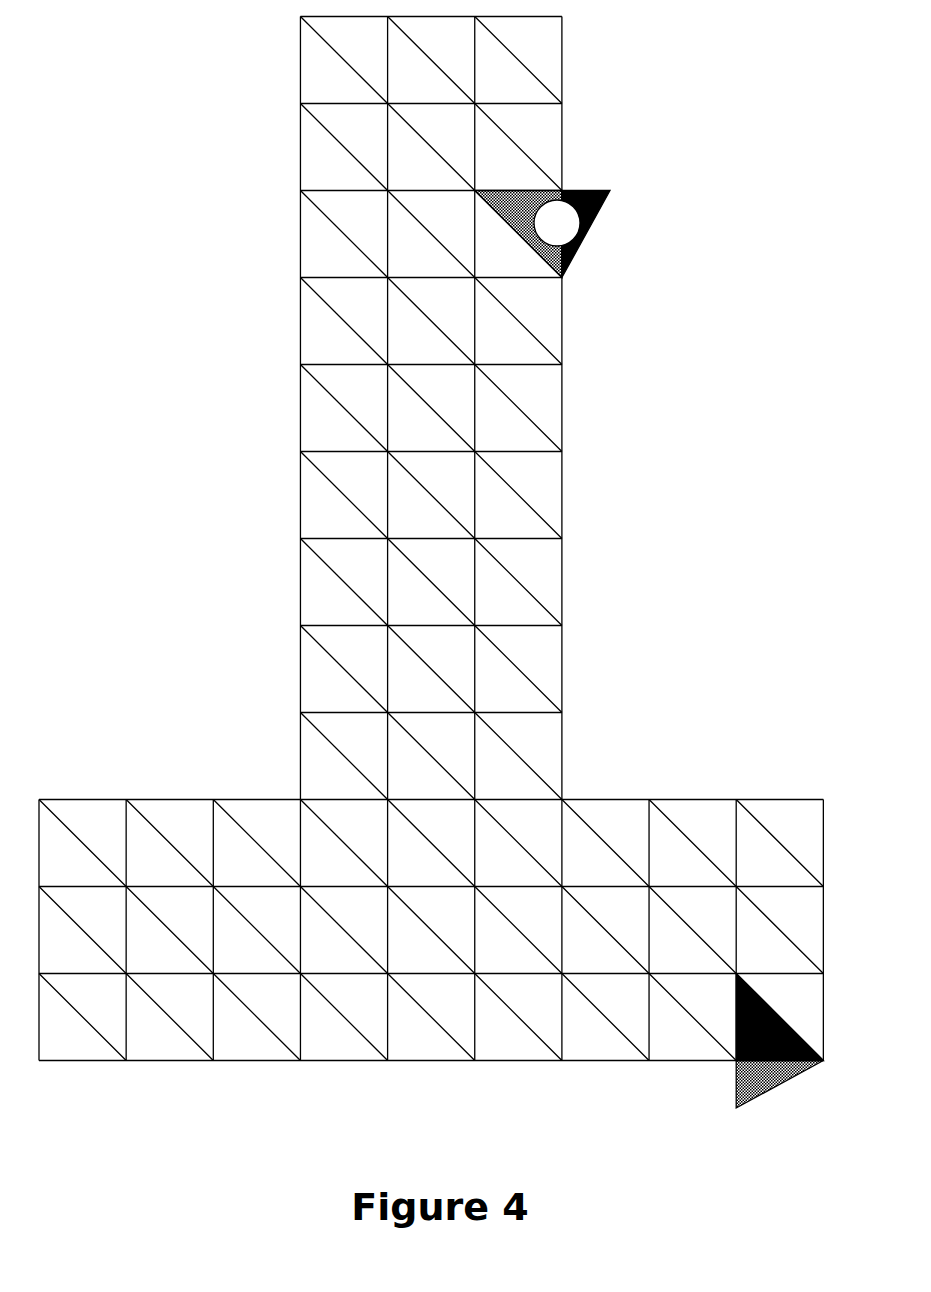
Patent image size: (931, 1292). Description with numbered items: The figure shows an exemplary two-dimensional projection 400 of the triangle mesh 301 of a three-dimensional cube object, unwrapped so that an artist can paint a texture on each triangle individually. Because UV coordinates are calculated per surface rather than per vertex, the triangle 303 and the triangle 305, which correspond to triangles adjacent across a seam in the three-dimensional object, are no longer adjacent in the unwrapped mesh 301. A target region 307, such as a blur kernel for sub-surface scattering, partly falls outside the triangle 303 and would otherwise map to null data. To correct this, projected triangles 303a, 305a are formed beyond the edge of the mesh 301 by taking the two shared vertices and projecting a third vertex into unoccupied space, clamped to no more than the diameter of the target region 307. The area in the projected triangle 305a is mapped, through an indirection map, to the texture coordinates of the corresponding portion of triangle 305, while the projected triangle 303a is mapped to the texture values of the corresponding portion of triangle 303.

The tiled wall structure 400 is at (431, 975).
The triangle mesh 301 is at (570, 578).
The triangle 303 is at (538, 262).
The projected triangle 305a is at (612, 203).
The target region 307 is at (557, 223).
The triangle 305 is at (790, 1012).
The projected triangle 303a is at (730, 1093).